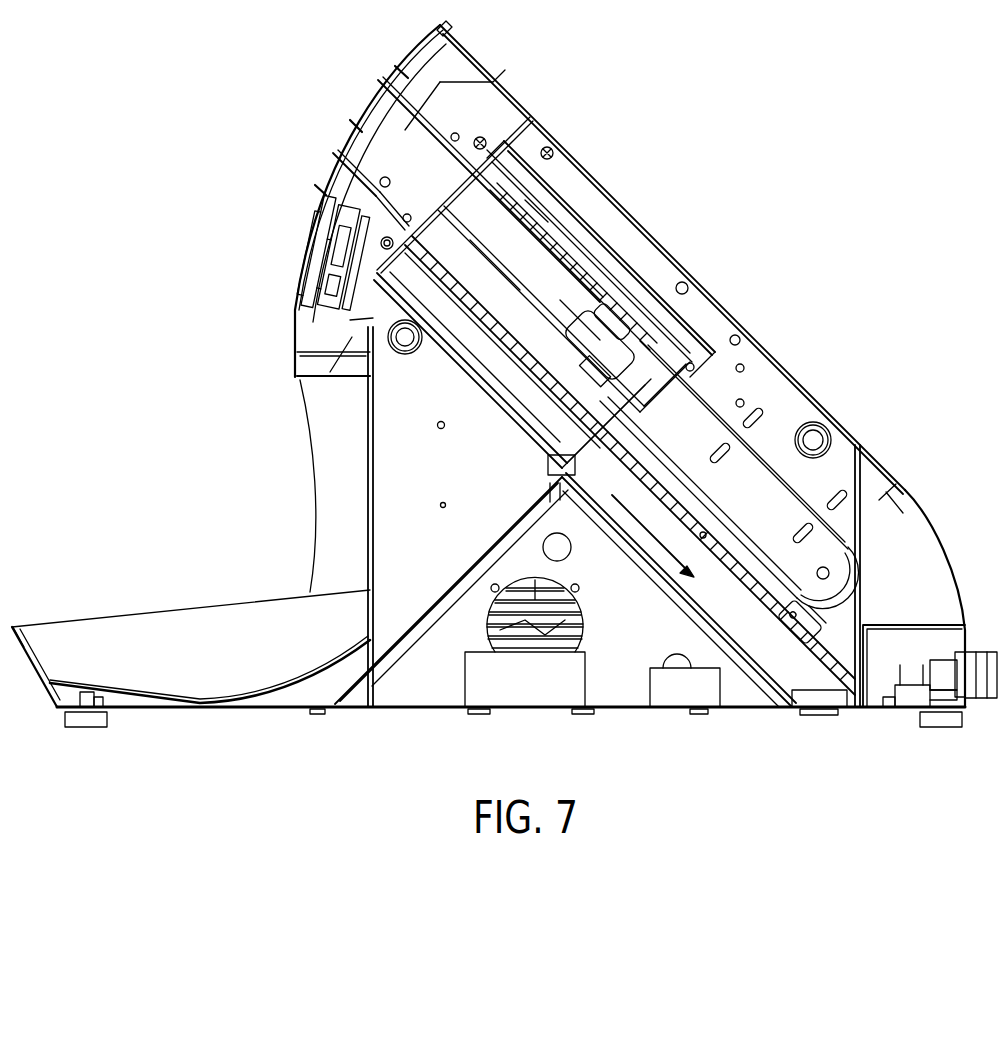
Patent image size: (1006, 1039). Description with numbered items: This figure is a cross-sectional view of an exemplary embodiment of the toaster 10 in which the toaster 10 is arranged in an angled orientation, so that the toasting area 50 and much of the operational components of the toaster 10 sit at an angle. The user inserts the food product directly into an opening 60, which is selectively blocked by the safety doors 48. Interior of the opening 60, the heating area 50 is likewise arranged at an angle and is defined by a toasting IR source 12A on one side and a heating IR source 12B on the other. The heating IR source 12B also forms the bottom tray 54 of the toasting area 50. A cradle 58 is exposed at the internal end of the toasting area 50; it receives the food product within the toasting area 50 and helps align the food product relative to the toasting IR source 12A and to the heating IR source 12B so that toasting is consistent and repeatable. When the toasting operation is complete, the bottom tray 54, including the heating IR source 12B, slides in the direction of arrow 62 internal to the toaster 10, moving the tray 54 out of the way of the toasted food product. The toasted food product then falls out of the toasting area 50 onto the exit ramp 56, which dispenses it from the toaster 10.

The toaster 10 is at (686, 109).
The toasting IR source 12A is at (552, 218).
The heating IR source 12B is at (532, 432).
The safety doors 48 is at (393, 140).
The toasting area 50 is at (497, 251).
The bottom tray 54 is at (482, 370).
The exit ramp 56 is at (462, 574).
The cradle 58 is at (633, 303).
The opening 60 is at (403, 147).
The arrow 62 is at (660, 541).